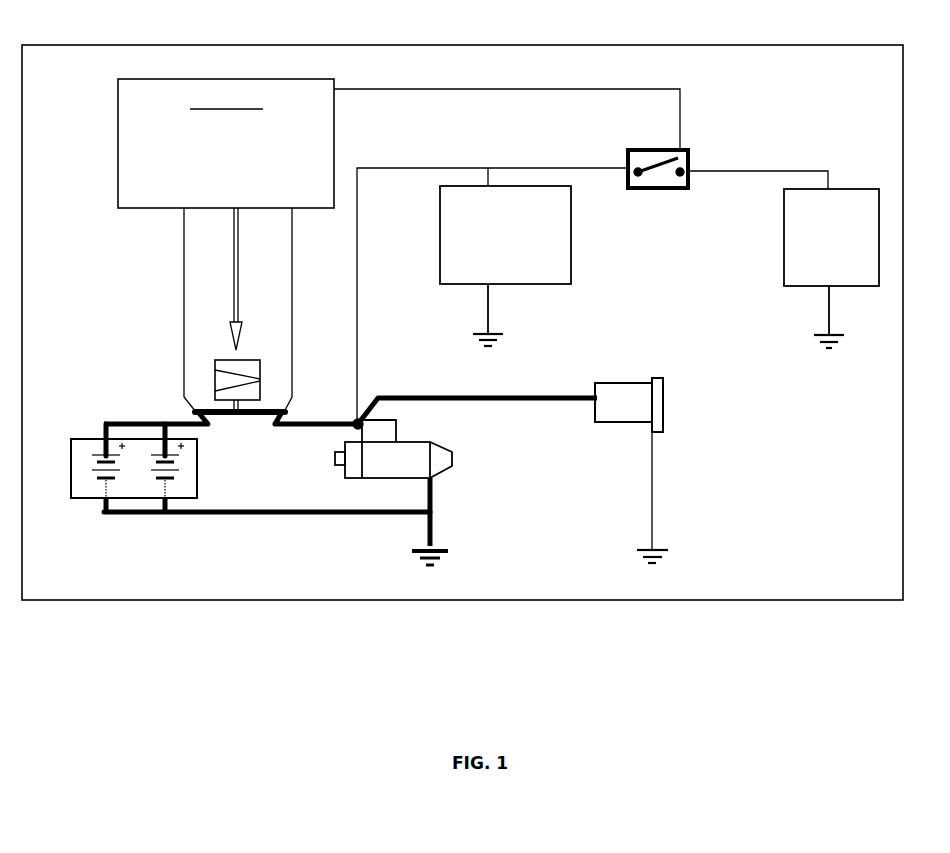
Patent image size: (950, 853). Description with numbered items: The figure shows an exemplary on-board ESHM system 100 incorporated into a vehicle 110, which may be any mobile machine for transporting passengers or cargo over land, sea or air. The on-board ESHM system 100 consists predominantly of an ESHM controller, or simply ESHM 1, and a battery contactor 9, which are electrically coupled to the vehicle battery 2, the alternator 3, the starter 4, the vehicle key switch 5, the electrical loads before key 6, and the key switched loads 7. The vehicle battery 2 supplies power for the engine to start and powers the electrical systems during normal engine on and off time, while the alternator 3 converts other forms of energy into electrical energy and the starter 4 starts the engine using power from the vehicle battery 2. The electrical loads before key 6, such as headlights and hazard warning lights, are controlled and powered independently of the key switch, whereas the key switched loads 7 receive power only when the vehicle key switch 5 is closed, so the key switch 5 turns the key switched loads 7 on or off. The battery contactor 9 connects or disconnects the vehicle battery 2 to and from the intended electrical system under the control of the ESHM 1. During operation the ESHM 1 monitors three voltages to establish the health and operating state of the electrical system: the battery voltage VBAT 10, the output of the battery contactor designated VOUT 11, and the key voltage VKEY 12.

The ESHM controller 1 is at (200, 78).
The vehicle battery 2 is at (95, 438).
The alternator 3 is at (627, 382).
The starter 4 is at (380, 486).
The vehicle key switch 5 is at (663, 191).
The electrical loads before key 6 is at (458, 286).
The key switched loads 7 is at (796, 290).
The battery contactor 9 is at (233, 430).
The VBAT 10 is at (137, 370).
The VOUT 11 is at (332, 363).
The VKEY 12 is at (735, 113).
The on-board ESHM system 100 is at (424, 132).
The vehicle 110 is at (75, 92).